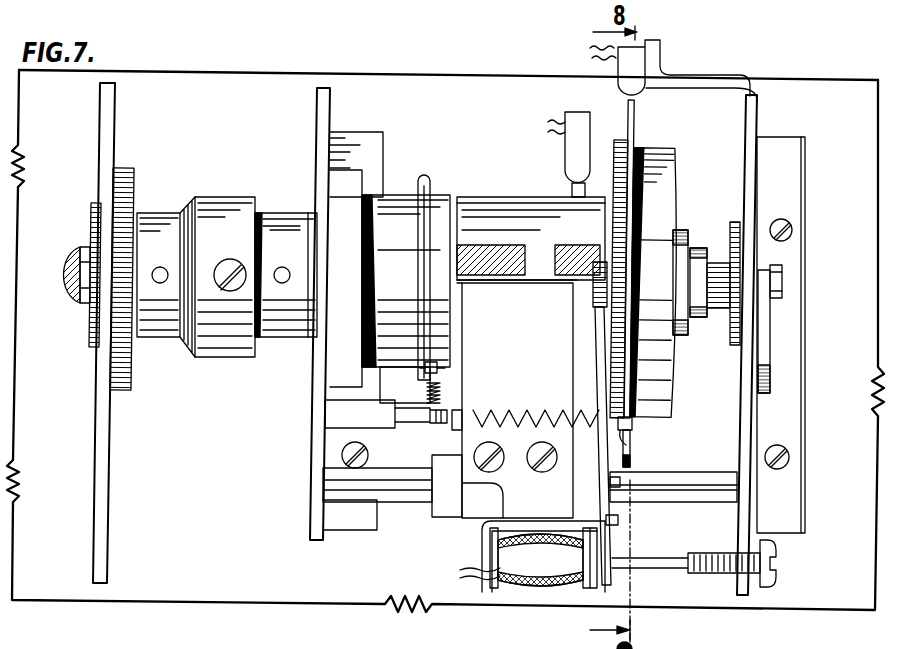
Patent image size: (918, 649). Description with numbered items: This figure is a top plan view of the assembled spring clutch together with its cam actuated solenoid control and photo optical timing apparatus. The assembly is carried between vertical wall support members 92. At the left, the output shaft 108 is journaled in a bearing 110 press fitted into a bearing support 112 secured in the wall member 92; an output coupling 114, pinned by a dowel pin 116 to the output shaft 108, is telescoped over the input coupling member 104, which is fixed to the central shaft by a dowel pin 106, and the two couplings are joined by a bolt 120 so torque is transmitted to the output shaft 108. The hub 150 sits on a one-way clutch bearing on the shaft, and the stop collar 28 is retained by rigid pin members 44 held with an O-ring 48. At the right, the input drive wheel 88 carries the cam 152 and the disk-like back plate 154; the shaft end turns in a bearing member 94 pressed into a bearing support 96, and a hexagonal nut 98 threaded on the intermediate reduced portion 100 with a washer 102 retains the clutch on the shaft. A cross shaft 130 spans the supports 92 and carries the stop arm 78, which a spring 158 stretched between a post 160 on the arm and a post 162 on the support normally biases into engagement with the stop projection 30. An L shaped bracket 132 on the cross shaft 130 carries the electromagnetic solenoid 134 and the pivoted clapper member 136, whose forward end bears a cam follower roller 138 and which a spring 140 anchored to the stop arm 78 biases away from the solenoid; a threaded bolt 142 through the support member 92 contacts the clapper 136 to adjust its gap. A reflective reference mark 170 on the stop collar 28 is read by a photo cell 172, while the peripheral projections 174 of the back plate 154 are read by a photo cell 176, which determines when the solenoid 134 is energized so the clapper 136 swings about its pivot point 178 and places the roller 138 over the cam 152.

The stop collar 28 is at (560, 244).
The stop projection 30 is at (548, 272).
The rigid pin member 44 is at (414, 269).
The O-ring 48 is at (429, 184).
The stop arm 78 is at (540, 396).
The input drive wheel 88 is at (668, 183).
The vertical wall support member 92 is at (103, 546).
The bearing member 94 is at (733, 347).
The bearing support 96 is at (762, 360).
The hexagonal nut 98 is at (700, 250).
The intermediate reduced portion 100 is at (716, 312).
The washer 102 is at (685, 228).
The input coupling member 104 is at (283, 228).
The dowel pin 106 is at (282, 284).
The output shaft 108 is at (72, 296).
The bearing 110 is at (92, 330).
The bearing support 112 is at (132, 305).
The output coupling 114 is at (206, 346).
The dowel pin 116 is at (160, 284).
The bolt 120 is at (232, 292).
The cross shaft 130 is at (677, 480).
The L shaped bracket 132 is at (485, 525).
The electromagnetic solenoid 134 is at (552, 572).
The clapper member 136 is at (597, 395).
The cam follower roller 138 is at (604, 285).
The spring 140 is at (507, 412).
The threaded bolt 142 is at (706, 555).
The hub 150 is at (336, 398).
The cam 152 is at (632, 425).
The back plate 154 is at (640, 125).
The spring 158 is at (430, 392).
The post 160 is at (455, 372).
The post 162 is at (373, 417).
The reference mark 170 is at (568, 192).
The photo cell 172 is at (565, 150).
The peripheral projection 174 is at (626, 108).
The photo cell 176 is at (640, 58).
The pivot point 178 is at (613, 524).